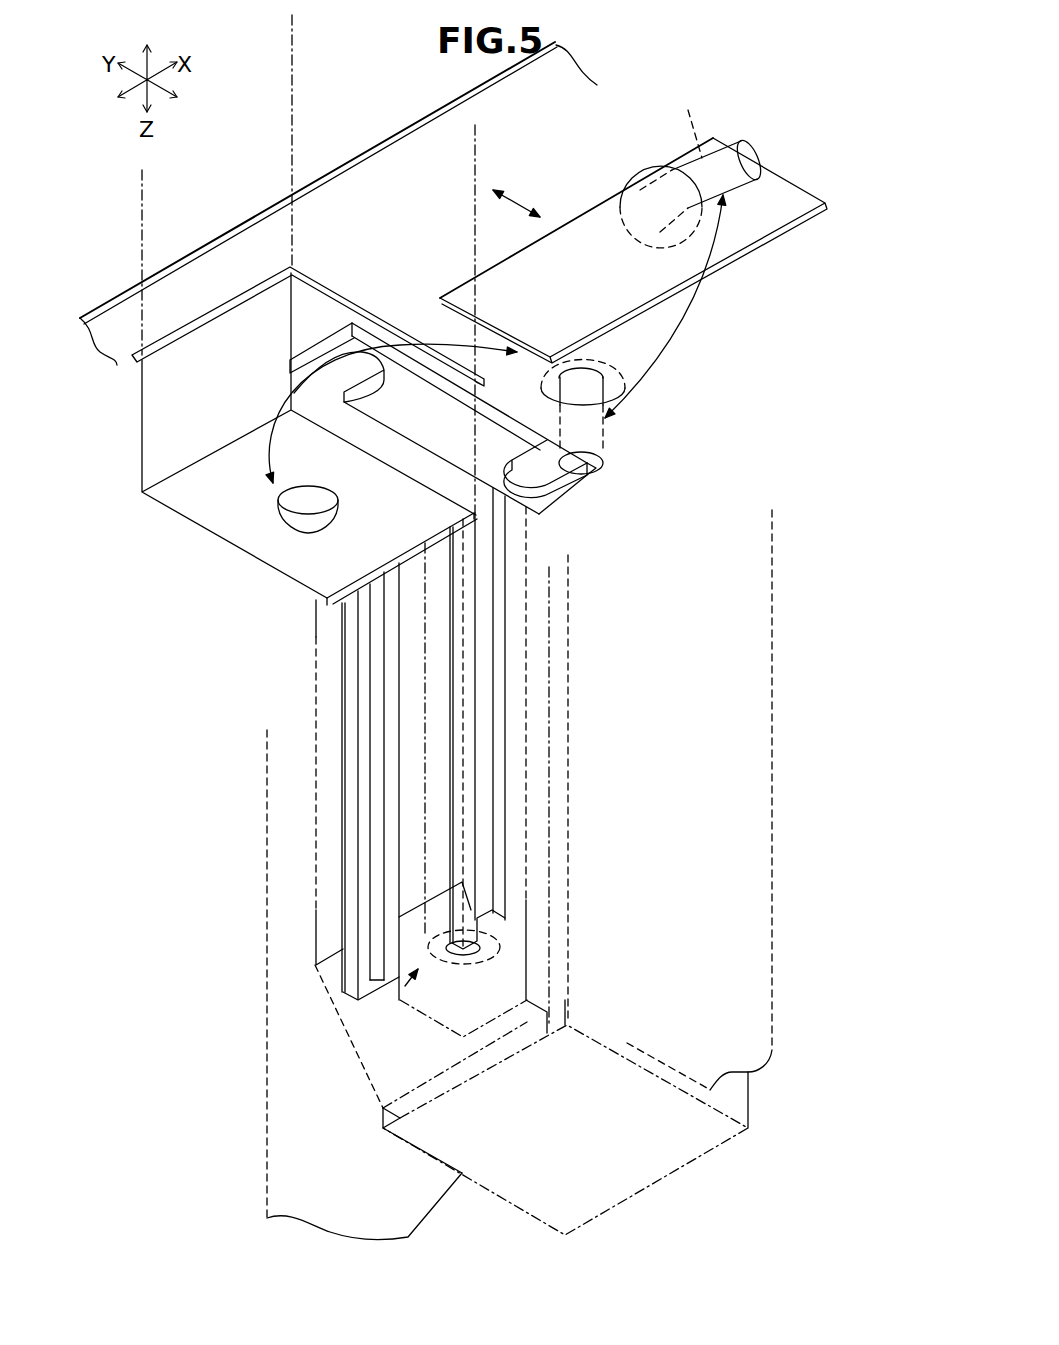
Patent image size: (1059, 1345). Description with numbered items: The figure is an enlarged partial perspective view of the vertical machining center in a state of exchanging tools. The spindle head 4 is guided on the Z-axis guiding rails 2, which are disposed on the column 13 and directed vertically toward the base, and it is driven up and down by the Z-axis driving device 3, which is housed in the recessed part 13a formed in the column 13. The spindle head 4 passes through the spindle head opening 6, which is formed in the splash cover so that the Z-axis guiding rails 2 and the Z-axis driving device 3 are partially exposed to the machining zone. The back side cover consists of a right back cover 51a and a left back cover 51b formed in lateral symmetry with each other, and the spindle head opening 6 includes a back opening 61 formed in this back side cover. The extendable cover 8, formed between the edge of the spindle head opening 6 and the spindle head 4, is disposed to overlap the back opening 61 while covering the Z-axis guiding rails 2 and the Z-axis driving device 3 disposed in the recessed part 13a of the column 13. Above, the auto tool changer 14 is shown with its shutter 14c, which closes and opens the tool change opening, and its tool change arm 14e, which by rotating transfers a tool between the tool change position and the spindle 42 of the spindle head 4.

The Z-axis guiding rails 2 is at (353, 692).
The Z-axis driving device 3 is at (450, 810).
The spindle head 4 is at (117, 256).
The spindle head opening 6 is at (321, 854).
The extendable cover 8 is at (557, 888).
The column 13 is at (645, 1142).
The recessed part 13a is at (340, 1020).
The auto tool changer 14 is at (744, 364).
The shutter 14c is at (567, 250).
The tool change arm 14e is at (443, 411).
The spindle 42 is at (298, 512).
The right back cover 51a is at (737, 890).
The left back cover 51b is at (297, 1075).
The back opening 61 is at (320, 888).